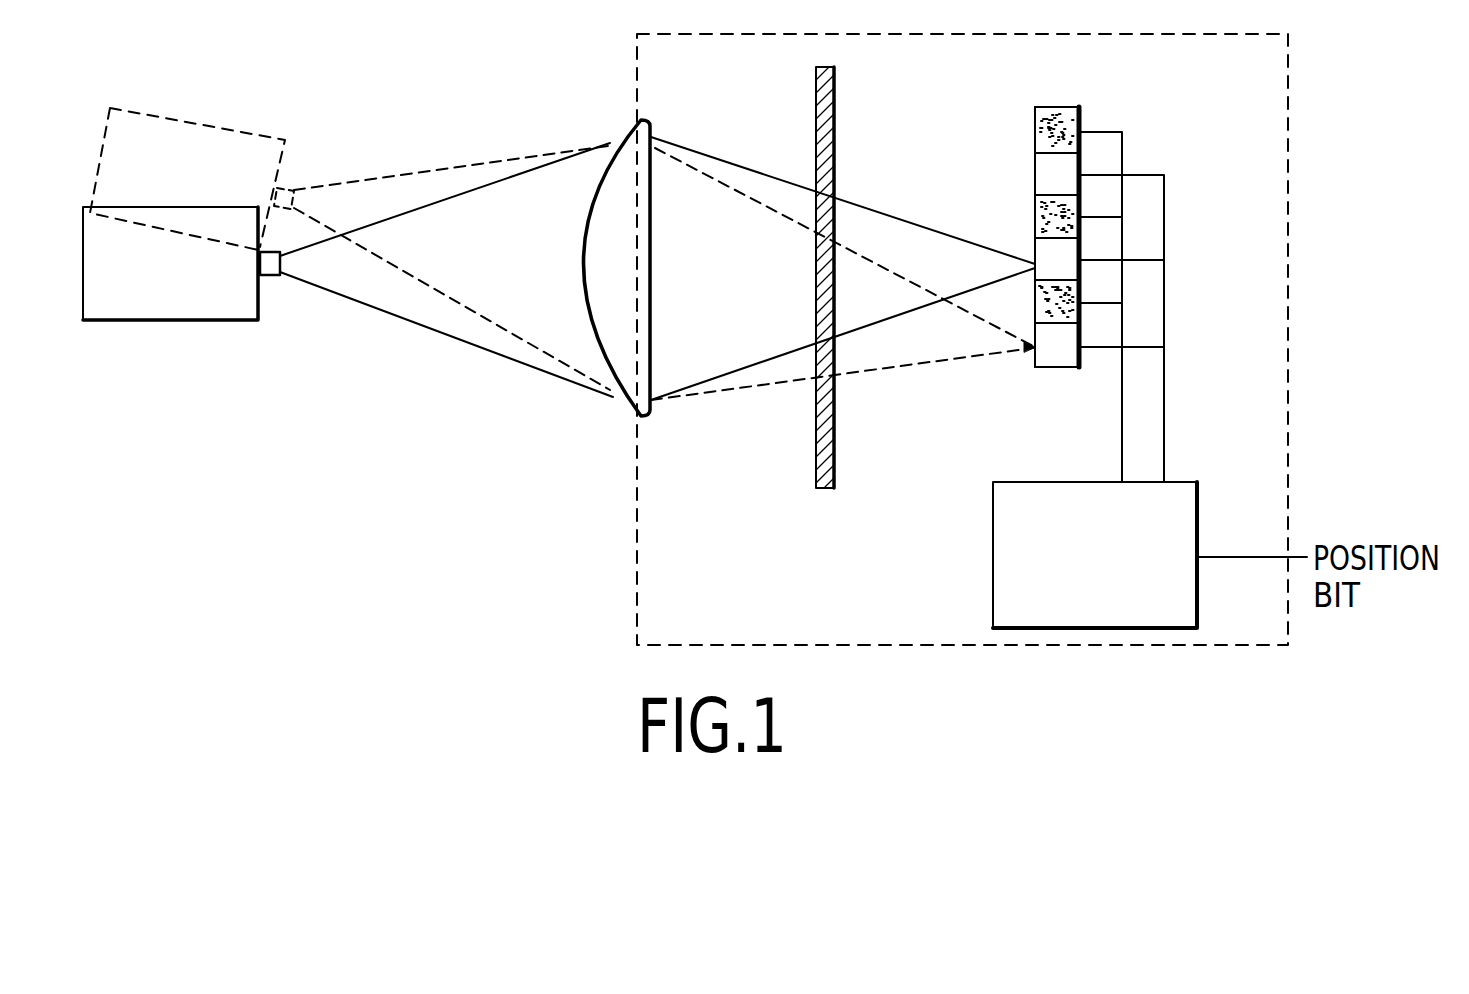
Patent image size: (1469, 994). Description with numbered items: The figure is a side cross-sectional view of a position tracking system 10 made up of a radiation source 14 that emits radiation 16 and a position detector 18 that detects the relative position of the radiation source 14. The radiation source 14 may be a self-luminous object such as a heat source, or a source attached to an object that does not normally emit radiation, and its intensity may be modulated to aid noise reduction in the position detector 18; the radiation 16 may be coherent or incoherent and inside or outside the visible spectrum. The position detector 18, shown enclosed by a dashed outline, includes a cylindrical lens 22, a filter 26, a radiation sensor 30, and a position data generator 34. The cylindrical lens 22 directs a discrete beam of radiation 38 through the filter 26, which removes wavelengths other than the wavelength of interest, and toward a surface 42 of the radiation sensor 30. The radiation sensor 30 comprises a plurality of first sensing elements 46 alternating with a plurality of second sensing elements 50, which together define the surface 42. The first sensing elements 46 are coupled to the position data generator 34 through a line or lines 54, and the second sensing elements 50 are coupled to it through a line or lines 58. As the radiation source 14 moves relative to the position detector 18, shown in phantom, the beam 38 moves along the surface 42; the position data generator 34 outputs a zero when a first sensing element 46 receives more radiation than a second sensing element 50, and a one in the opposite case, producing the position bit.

The position tracking system 10 is at (536, 380).
The radiation source 14 is at (186, 320).
The radiation 16 is at (425, 325).
The position detector 18 is at (1292, 412).
The cylindrical lens 22 is at (620, 408).
The filter 26 is at (836, 95).
The radiation sensor 30 is at (1024, 166).
The position data generator 34 is at (993, 513).
The discrete beam of radiation 38 is at (701, 168).
The surface 42 is at (1035, 238).
The first sensing elements 46 is at (1081, 122).
The second sensing elements 50 is at (1070, 171).
The line or lines 54 is at (1122, 432).
The line or lines 58 is at (1164, 420).